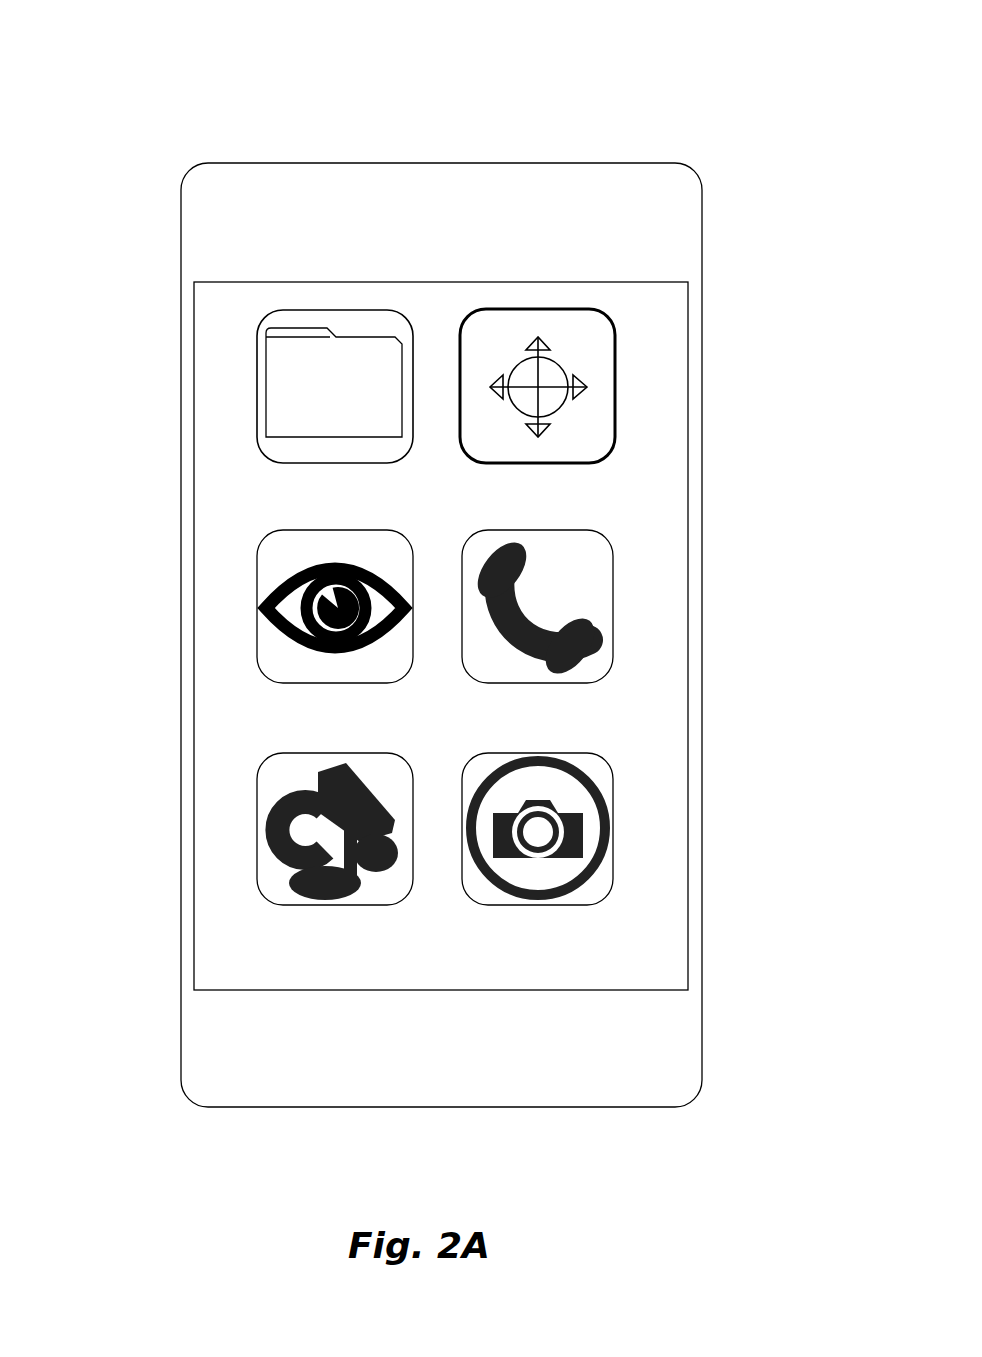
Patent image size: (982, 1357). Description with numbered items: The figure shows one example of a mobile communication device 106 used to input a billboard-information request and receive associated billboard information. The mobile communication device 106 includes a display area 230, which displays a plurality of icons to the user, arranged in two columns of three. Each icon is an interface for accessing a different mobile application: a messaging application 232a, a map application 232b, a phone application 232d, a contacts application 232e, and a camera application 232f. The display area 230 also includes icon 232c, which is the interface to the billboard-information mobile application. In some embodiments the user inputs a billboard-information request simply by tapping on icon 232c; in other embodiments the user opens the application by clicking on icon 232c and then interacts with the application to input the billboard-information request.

The mobile communication device 106 is at (763, 50).
The display area 230 is at (210, 310).
The messaging application 232a is at (258, 387).
The map application 232b is at (615, 388).
The icon 232c is at (258, 631).
The phone application 232d is at (612, 590).
The contacts application 232e is at (258, 842).
The camera application 232f is at (615, 808).